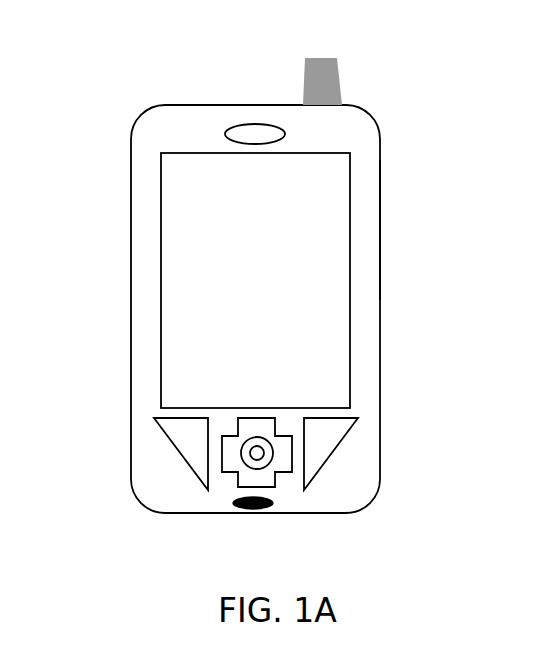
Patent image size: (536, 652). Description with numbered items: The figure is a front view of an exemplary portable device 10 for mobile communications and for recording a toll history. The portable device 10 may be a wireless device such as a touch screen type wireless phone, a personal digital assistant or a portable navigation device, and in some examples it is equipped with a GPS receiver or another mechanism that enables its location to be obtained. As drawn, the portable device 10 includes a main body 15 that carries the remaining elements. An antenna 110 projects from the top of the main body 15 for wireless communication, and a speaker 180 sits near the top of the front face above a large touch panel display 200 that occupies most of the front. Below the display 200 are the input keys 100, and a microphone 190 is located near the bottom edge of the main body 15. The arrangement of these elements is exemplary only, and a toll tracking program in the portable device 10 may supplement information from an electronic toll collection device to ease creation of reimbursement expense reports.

The portable device 10 is at (221, 280).
The main body 15 is at (370, 212).
The input keys 100 is at (230, 472).
The antenna 110 is at (340, 72).
The speaker 180 is at (237, 123).
The microphone 190 is at (275, 507).
The touch panel display 200 is at (188, 262).